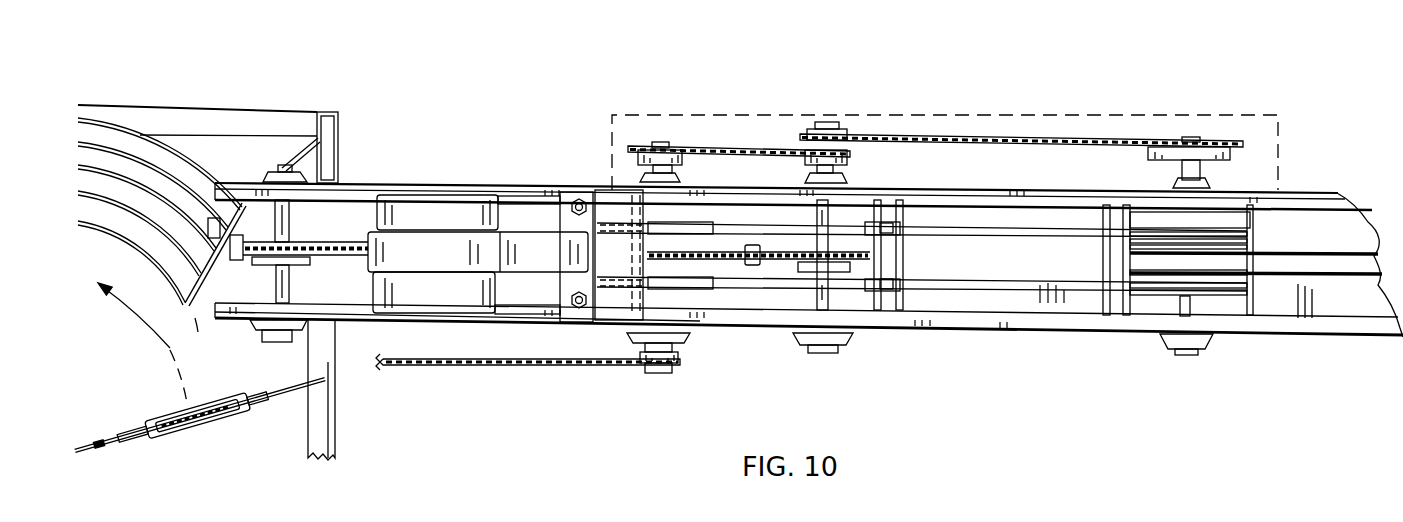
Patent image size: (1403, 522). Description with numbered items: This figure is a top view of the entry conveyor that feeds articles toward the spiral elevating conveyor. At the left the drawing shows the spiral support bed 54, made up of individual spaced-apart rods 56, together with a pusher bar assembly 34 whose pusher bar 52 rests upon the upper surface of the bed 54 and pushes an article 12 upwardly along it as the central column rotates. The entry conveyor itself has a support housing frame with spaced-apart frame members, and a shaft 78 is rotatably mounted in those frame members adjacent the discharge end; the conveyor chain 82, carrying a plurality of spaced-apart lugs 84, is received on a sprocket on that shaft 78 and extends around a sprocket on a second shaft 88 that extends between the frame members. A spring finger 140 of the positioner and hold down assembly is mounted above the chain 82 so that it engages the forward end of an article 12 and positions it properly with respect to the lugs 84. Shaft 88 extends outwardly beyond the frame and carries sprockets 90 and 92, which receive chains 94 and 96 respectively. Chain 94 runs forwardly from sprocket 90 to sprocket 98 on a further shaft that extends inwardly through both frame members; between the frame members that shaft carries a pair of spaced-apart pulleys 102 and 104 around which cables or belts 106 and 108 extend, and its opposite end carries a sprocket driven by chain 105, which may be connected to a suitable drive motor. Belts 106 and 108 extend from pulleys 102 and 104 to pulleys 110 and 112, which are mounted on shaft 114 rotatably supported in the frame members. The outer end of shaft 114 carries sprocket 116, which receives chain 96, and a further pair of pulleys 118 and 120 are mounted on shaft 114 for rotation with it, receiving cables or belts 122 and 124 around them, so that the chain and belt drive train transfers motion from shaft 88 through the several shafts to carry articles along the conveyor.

The article 12 is at (438, 210).
The pusher bar assembly 34 is at (146, 409).
The pusher bar 52 is at (298, 398).
The spiral support bed 54 is at (157, 170).
The rod 56 is at (150, 343).
The shaft 78 is at (290, 220).
The conveyor chain 82 is at (337, 258).
The lug 84 is at (213, 235).
The shaft 88 is at (833, 172).
The sprocket 90 is at (797, 150).
The sprocket 92 is at (813, 130).
The chain 94 is at (750, 143).
The chain 96 is at (1043, 140).
The sprocket 98 is at (645, 165).
The pulley 102 is at (700, 220).
The pulley 104 is at (693, 290).
The chain 105 is at (550, 367).
The belt 106 is at (843, 223).
The belt 108 is at (840, 292).
The pulley 110 is at (1153, 227).
The pulley 112 is at (1220, 297).
The shaft 114 is at (1180, 307).
The sprocket 116 is at (1223, 140).
The pulley 118 is at (1130, 245).
The pulley 120 is at (1267, 272).
The belt 122 is at (1310, 253).
The belt 124 is at (1323, 283).
The spring finger 140 is at (540, 247).